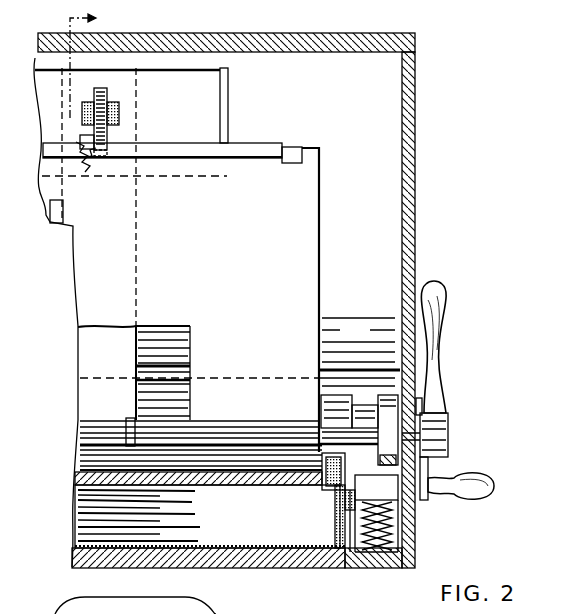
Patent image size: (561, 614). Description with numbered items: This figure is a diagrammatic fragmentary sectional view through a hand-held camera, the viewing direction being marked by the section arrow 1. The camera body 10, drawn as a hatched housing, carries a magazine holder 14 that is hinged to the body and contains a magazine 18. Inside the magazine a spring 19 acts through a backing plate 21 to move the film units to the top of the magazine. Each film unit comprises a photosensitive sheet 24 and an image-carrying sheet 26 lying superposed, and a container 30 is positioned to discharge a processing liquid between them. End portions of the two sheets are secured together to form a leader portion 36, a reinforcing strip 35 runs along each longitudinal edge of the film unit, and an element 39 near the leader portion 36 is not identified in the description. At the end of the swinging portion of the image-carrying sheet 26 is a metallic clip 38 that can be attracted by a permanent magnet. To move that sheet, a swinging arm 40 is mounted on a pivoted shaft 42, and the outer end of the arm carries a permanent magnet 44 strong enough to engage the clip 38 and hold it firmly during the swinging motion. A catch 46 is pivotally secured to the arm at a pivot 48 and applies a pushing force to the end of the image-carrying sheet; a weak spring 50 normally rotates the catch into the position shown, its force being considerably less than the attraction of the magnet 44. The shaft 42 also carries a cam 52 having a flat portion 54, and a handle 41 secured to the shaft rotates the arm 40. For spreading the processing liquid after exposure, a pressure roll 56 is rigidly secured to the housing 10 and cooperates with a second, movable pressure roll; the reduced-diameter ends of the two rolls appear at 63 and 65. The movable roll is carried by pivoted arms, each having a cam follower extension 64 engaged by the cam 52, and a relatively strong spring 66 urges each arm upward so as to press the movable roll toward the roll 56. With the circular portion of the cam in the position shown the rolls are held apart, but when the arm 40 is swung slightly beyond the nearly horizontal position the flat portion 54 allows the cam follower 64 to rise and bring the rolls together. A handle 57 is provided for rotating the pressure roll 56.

The section line 1 is at (92, 64).
The camera body 10 is at (410, 118).
The magazine holder 14 is at (262, 552).
The magazine 18 is at (272, 548).
The spring 19 is at (196, 526).
The backing plate 21 is at (288, 485).
The photosensitive sheet 24 is at (200, 478).
The image-carrying sheet 26 is at (232, 271).
The container 30 is at (270, 452).
The reinforcing strip 35 is at (324, 490).
The leader portion 36 is at (156, 605).
The metallic clip 38 is at (272, 158).
The base element 39 is at (273, 610).
The swinging arm 40 is at (116, 357).
The handle 41 is at (447, 326).
The pivoted shaft 42 is at (178, 434).
The permanent magnet 44 is at (226, 104).
The catch 46 is at (110, 136).
The pivot 48 is at (118, 116).
The weak spring 50 is at (90, 166).
The cam 52 is at (388, 395).
The flat portion 54 is at (448, 424).
The pressure roll 56 is at (172, 380).
The handle 57 is at (472, 476).
The reduced-diameter end 63 is at (334, 395).
The cam follower extension 64 is at (385, 490).
The reduced-diameter end 65 is at (352, 550).
The spring 66 is at (388, 542).